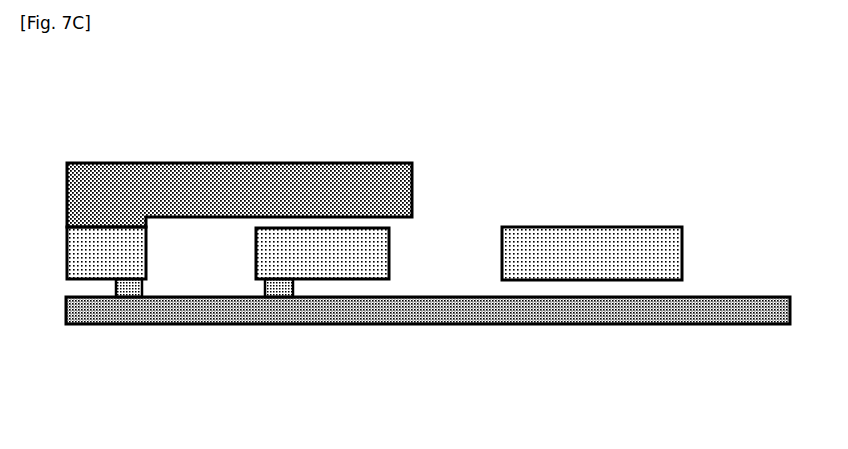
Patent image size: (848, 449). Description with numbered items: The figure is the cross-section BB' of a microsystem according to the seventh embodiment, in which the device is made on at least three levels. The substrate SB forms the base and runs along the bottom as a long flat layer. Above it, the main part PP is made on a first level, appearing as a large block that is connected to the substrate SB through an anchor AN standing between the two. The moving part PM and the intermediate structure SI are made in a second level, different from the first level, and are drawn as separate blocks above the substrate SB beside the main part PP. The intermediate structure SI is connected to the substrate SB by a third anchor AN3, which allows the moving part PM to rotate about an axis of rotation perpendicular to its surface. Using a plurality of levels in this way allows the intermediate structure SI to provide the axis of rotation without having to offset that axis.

The main part PP is at (155, 188).
The cross-section BB' is at (93, 203).
The intermediate structure SI is at (381, 256).
The moving part PM is at (603, 237).
The anchor AN is at (131, 290).
The third anchor AN3 is at (281, 290).
The substrate SB is at (714, 300).